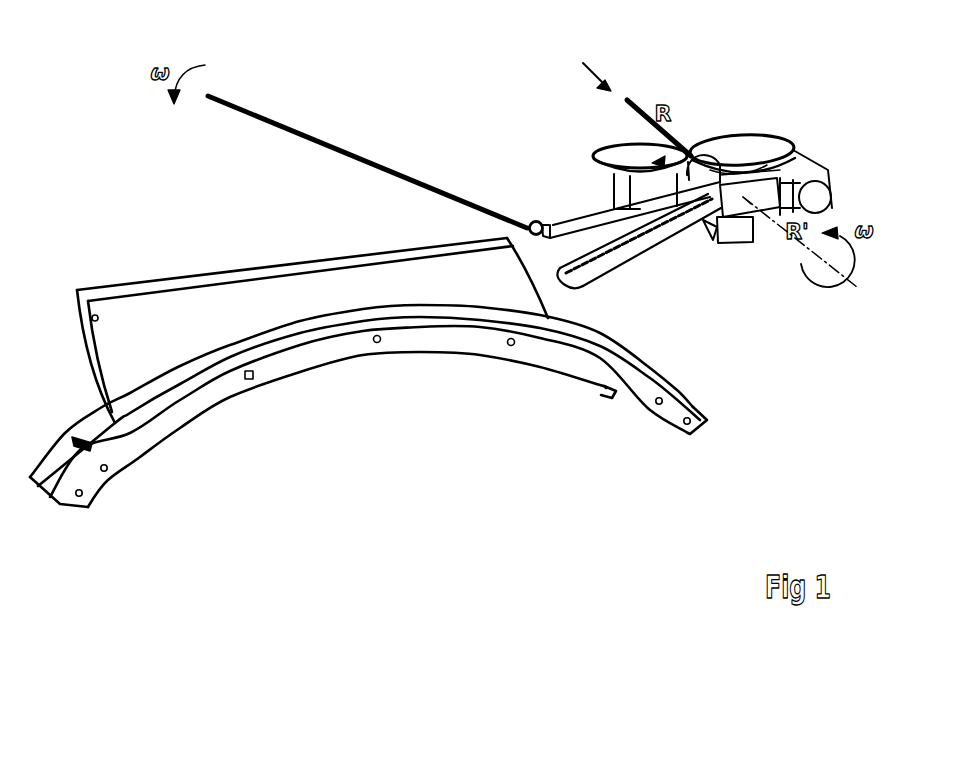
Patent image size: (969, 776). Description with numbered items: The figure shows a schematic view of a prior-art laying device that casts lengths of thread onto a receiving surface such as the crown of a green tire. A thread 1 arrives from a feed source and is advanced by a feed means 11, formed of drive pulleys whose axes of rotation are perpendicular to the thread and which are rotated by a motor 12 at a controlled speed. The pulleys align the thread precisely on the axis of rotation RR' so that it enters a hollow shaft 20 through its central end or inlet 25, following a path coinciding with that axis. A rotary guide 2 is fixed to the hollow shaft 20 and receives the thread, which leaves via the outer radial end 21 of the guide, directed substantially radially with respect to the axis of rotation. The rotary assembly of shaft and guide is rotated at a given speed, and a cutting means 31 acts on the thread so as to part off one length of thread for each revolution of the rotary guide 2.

The thread 1 is at (381, 166).
The feed means 11 is at (592, 157).
The motor 12 is at (621, 198).
The central end of the hollow shaft 25 is at (692, 147).
The hollow shaft 20 is at (730, 167).
The rotary guide 2 is at (617, 221).
The means for cutting the thread 31 is at (593, 288).
The outer radial end of the rotary guide 21 is at (555, 238).